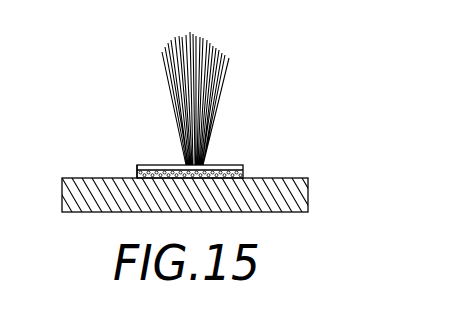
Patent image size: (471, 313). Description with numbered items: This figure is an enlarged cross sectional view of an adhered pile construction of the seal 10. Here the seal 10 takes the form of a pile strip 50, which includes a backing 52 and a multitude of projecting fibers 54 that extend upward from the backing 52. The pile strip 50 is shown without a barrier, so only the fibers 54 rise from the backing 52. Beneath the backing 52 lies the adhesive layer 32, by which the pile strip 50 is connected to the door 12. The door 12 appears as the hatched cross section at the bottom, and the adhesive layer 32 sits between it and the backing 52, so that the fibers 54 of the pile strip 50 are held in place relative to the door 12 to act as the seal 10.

The seal 10 is at (119, 69).
The door 12 is at (303, 200).
The adhesive layer 32 is at (136, 173).
The pile strip 50 is at (230, 98).
The backing 52 is at (233, 171).
The projecting fibers 54 is at (216, 63).